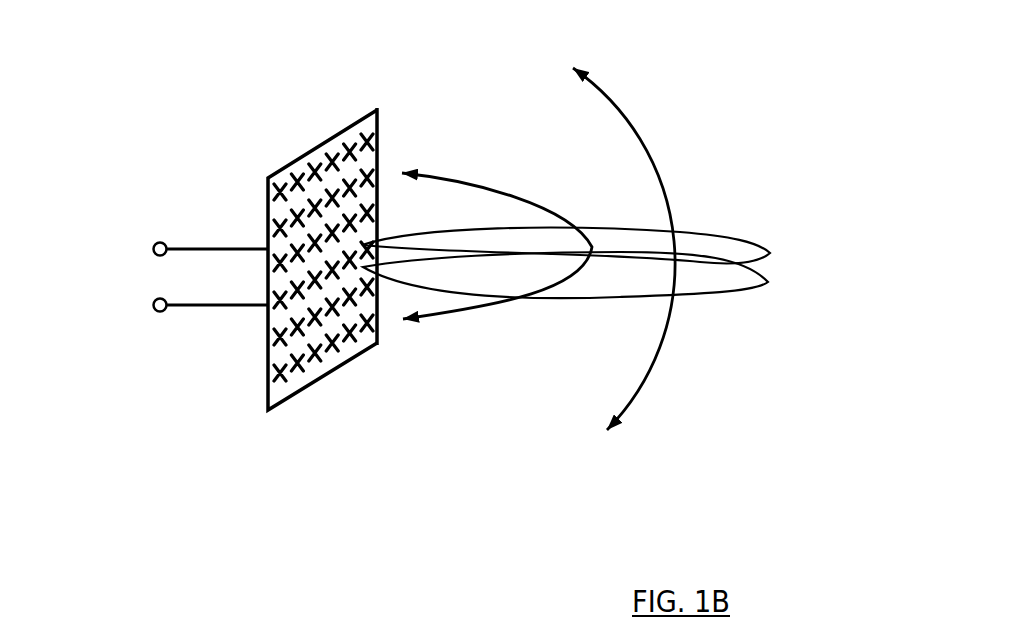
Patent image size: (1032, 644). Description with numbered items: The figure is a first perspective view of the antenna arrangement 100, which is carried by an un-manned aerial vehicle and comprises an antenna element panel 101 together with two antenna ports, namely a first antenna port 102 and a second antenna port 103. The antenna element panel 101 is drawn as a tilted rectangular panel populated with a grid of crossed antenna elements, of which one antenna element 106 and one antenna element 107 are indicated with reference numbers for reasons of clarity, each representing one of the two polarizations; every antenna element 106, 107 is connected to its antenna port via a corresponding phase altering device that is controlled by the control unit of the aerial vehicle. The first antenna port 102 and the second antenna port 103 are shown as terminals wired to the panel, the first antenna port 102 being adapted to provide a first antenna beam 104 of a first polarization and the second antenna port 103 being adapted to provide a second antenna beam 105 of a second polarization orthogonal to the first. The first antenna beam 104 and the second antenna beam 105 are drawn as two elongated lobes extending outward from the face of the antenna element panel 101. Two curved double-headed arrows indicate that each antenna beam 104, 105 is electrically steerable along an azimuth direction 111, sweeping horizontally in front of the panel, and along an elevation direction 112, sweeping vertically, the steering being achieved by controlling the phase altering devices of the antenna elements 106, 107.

The antenna arrangement 100 is at (252, 122).
The antenna element panel 101 is at (268, 178).
The first antenna port 102 is at (154, 243).
The second antenna port 103 is at (154, 299).
The first antenna beam 104 is at (746, 244).
The second antenna beam 105 is at (771, 282).
The antenna element 106 is at (378, 133).
The antenna element 107 is at (356, 130).
The azimuth direction 111 is at (457, 178).
The elevation direction 112 is at (625, 106).